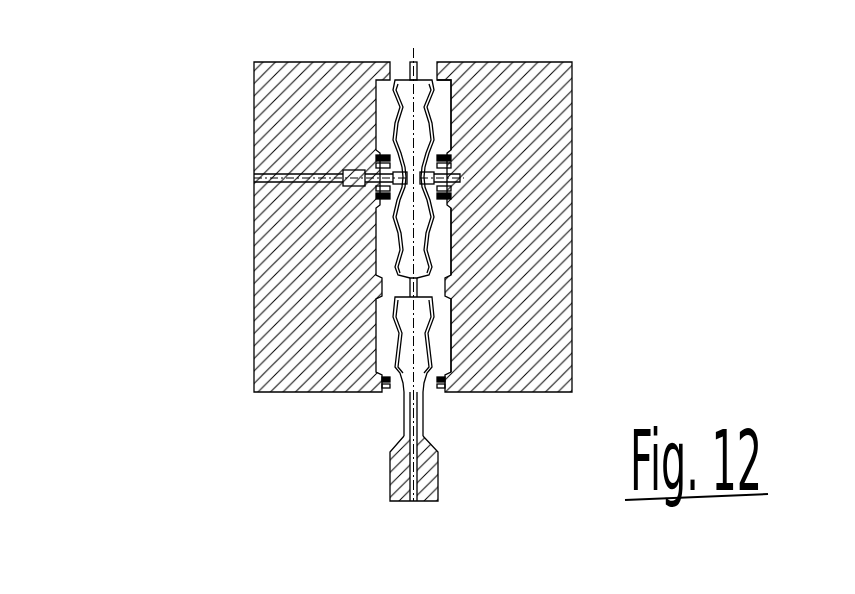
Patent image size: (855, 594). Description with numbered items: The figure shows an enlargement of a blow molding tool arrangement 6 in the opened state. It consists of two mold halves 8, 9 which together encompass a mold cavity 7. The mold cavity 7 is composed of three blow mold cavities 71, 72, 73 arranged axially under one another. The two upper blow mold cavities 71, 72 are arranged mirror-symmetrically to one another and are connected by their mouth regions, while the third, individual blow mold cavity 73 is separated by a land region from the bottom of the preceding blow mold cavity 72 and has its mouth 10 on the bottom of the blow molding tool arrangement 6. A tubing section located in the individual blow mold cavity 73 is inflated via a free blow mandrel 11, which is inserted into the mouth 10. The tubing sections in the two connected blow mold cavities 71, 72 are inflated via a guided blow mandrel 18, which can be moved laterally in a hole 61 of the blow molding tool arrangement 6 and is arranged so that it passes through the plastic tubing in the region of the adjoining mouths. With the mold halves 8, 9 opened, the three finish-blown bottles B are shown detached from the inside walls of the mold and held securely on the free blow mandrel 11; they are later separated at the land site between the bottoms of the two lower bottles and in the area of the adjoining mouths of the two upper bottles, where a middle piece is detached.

The blow molding tool arrangement 6 is at (128, 104).
The mold cavity 7 is at (481, 222).
The mold half 8 is at (572, 101).
The mold half 9 is at (258, 128).
The blow mold cavity 71 is at (450, 105).
The blow mold cavity 72 is at (452, 250).
The individual blow mold cavity 73 is at (450, 342).
The hole 61 is at (255, 178).
The guided blow mandrel 18 is at (348, 182).
The finish-blown bottles B is at (403, 318).
The mouth 10 is at (388, 388).
The free blow mandrel 11 is at (430, 467).